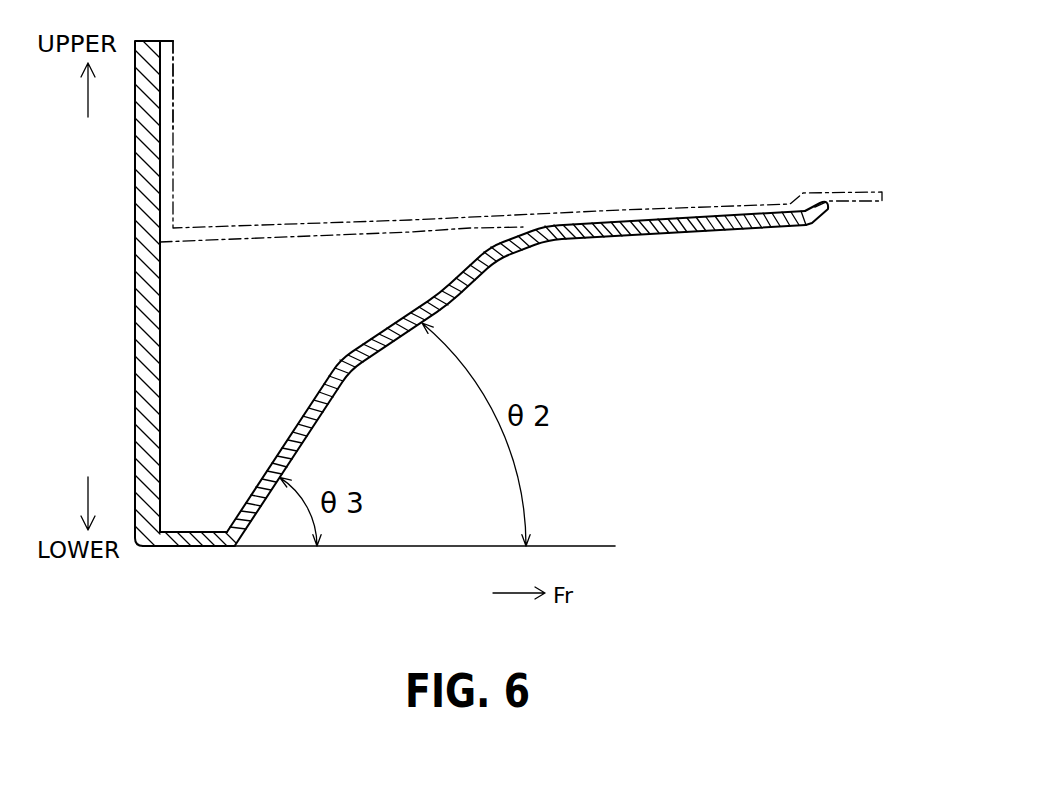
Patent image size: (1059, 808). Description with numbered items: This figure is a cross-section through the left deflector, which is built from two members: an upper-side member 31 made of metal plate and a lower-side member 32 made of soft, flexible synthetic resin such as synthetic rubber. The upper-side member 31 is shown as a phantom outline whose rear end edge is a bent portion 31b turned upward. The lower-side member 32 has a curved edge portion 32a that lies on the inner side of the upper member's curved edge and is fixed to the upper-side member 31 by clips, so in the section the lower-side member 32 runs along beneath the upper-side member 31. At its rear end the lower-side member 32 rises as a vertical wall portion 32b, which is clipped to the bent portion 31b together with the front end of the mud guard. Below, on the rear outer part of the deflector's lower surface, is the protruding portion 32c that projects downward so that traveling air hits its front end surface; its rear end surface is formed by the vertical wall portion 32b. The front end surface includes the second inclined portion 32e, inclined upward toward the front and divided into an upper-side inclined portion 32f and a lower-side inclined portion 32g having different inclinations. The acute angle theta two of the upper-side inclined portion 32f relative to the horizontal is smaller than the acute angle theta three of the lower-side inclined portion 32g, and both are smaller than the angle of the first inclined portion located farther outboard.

The upper-side member 31 is at (460, 214).
The bent portion 31b is at (173, 120).
The lower-side member 32 is at (489, 284).
The curved edge portion 32a is at (694, 232).
The vertical wall portion 32b is at (135, 153).
The protruding portion 32c is at (190, 548).
The second inclined portion 32e is at (349, 413).
The upper-side inclined portion 32f is at (387, 338).
The lower-side inclined portion 32g is at (312, 442).